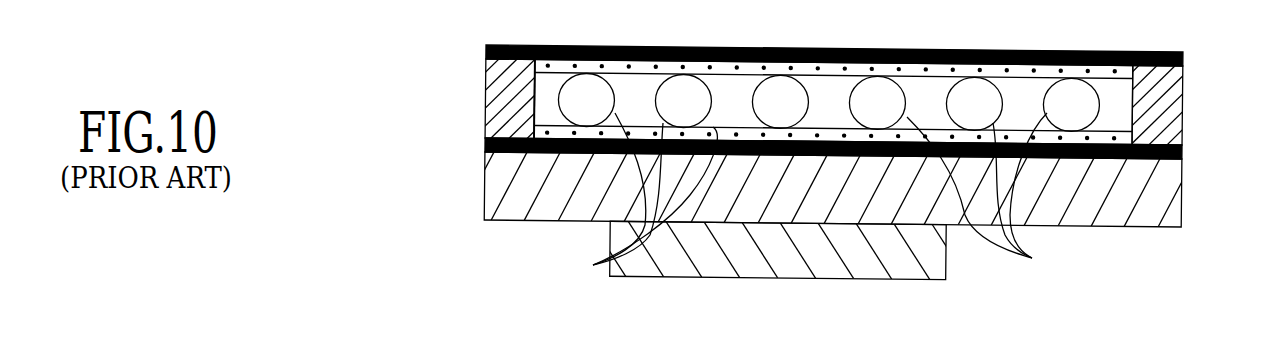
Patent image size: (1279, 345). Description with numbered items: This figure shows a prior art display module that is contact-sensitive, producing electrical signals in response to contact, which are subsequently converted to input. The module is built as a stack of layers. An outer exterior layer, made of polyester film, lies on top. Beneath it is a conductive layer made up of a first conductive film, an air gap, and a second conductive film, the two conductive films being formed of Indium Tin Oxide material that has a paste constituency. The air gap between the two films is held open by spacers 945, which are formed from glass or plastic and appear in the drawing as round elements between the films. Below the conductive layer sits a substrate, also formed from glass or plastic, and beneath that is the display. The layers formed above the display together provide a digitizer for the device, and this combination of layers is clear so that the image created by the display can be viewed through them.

The spacers 945 is at (811, 201).